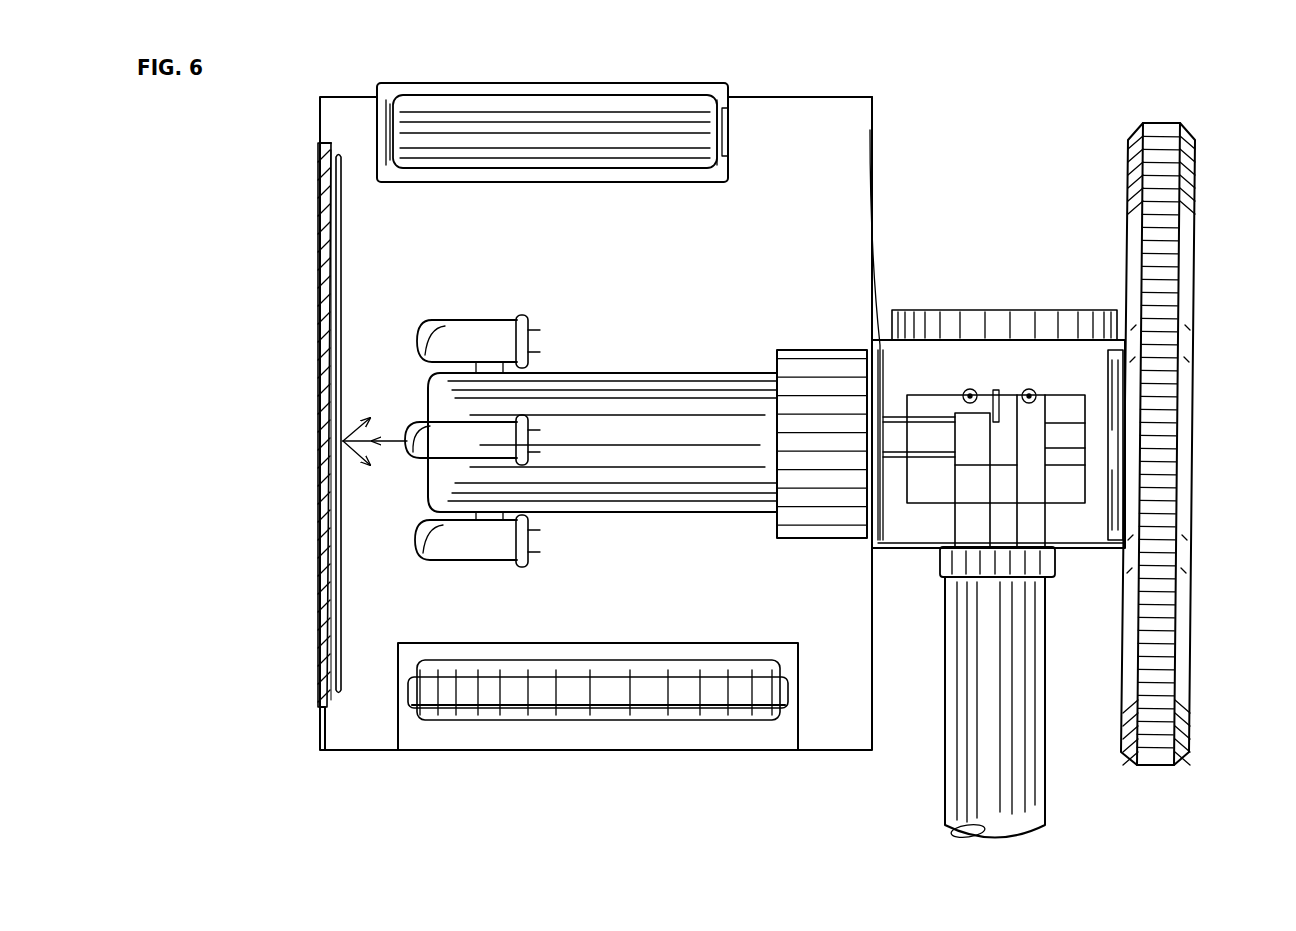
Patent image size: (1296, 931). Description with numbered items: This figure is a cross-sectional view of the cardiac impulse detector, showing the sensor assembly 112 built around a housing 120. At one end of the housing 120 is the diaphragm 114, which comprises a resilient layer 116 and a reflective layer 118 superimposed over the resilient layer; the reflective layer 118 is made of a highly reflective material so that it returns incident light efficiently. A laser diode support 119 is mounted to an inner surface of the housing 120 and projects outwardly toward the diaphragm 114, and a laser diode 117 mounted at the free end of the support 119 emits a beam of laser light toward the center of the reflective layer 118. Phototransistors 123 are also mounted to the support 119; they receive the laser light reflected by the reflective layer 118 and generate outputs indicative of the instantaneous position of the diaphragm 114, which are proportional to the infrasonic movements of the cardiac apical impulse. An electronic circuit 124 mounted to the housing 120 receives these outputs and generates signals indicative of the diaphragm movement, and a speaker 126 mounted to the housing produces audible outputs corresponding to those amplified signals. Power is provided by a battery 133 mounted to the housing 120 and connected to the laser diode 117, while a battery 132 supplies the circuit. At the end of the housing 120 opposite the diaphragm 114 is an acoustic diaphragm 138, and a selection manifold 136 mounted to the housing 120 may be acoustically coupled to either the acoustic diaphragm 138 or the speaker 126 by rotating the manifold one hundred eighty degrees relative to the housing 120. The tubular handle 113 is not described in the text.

The sensor assembly 112 is at (890, 97).
The handle 113 is at (1040, 773).
The diaphragm 114 is at (316, 308).
The resilient layer 116 is at (320, 268).
The laser diode 117 is at (408, 442).
The reflective layer 118 is at (345, 160).
The laser diode support 119 is at (602, 445).
The housing 120 is at (795, 97).
The phototransistors 123 is at (420, 322).
The electronic circuit 124 is at (658, 513).
The speaker 126 is at (820, 350).
The battery 132 is at (500, 95).
The battery 133 is at (680, 718).
The selection manifold 136 is at (1055, 395).
The acoustic diaphragm 138 is at (1198, 306).